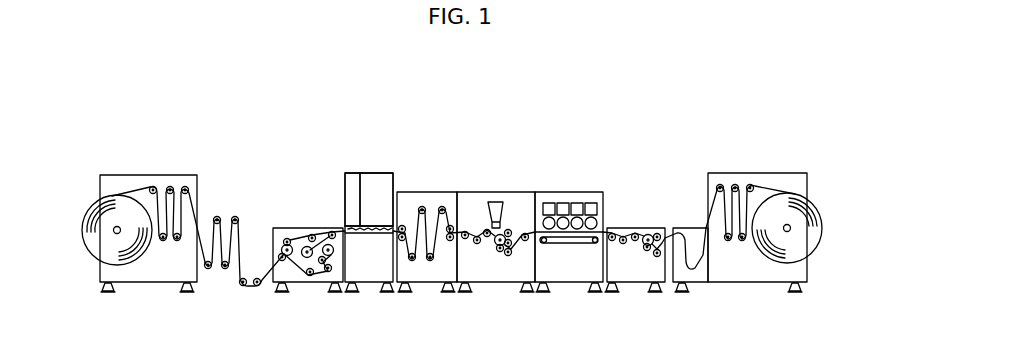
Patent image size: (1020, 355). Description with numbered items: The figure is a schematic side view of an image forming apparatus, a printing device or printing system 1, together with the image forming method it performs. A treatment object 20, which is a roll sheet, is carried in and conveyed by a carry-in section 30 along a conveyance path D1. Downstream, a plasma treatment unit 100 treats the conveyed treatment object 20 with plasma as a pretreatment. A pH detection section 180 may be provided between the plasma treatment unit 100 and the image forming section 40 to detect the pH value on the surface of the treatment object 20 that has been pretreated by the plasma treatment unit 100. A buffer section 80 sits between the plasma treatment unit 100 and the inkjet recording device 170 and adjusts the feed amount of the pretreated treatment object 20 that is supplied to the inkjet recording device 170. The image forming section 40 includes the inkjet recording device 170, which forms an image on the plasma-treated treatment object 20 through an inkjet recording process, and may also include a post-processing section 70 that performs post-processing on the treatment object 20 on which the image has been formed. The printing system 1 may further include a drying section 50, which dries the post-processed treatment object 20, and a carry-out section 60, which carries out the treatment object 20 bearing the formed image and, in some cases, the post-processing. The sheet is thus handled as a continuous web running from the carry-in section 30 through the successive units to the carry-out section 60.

The printing system 1 is at (668, 115).
The treatment object 20 is at (815, 249).
The carry-in section 30 is at (763, 173).
The image forming section 40 is at (371, 136).
The drying section 50 is at (312, 228).
The carry-out section 60 is at (155, 173).
The post-processing section 70 is at (355, 173).
The buffer section 80 is at (430, 192).
The plasma treatment unit 100 is at (575, 192).
The inkjet recording device 170 is at (380, 173).
The pH detection section 180 is at (497, 192).
The conveyance path D1 is at (238, 221).